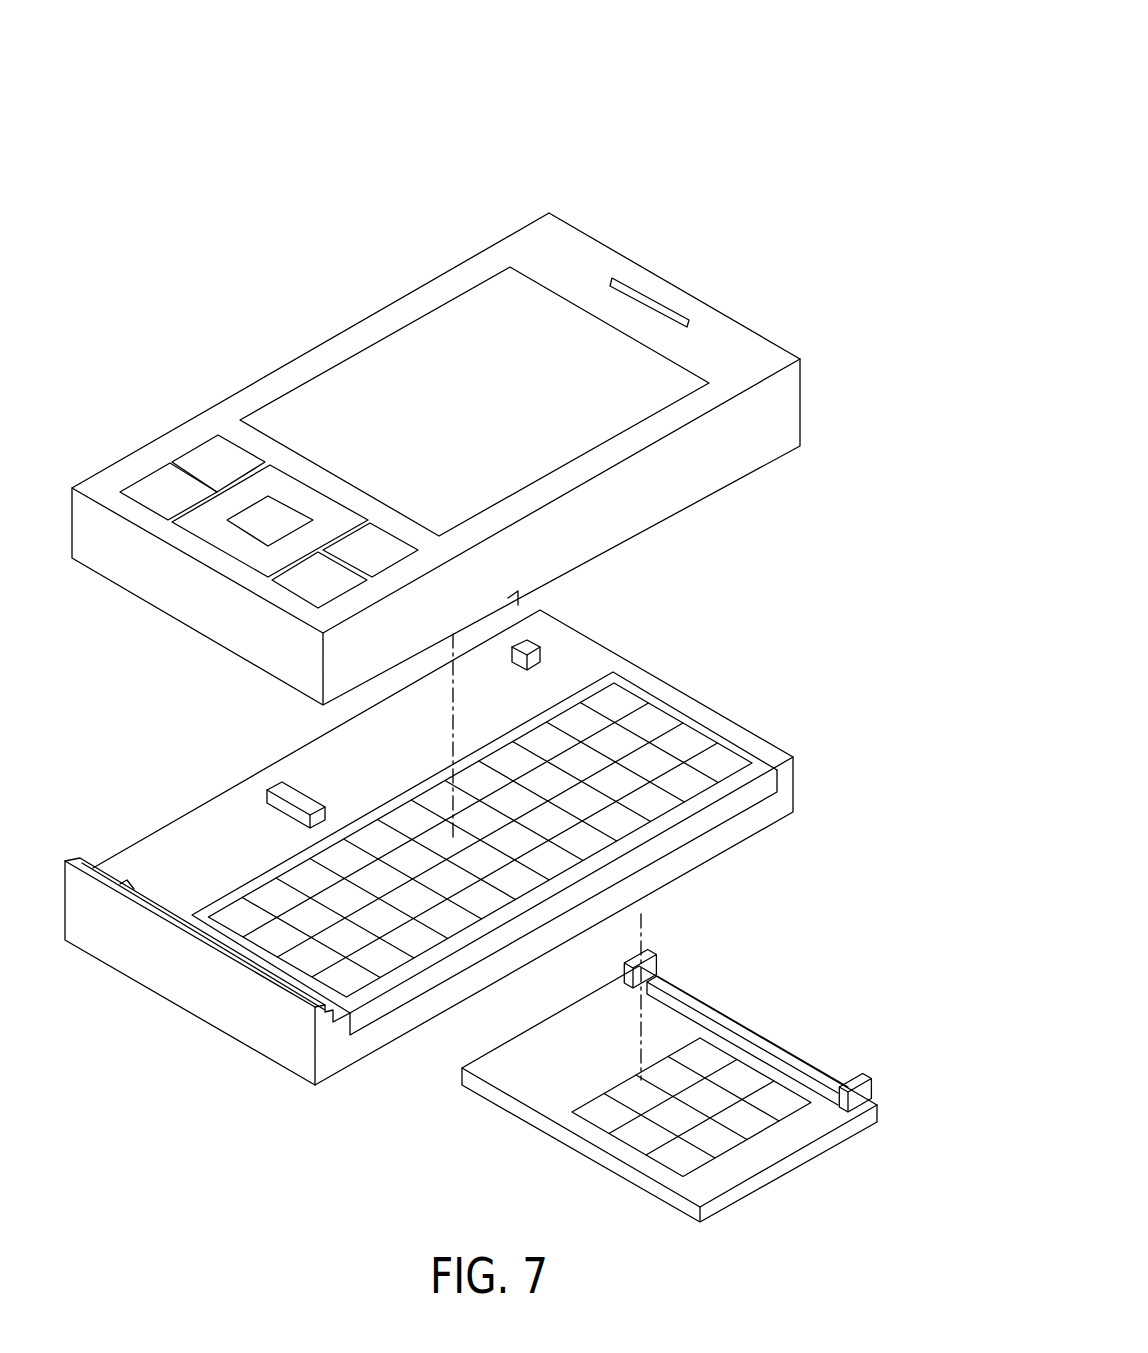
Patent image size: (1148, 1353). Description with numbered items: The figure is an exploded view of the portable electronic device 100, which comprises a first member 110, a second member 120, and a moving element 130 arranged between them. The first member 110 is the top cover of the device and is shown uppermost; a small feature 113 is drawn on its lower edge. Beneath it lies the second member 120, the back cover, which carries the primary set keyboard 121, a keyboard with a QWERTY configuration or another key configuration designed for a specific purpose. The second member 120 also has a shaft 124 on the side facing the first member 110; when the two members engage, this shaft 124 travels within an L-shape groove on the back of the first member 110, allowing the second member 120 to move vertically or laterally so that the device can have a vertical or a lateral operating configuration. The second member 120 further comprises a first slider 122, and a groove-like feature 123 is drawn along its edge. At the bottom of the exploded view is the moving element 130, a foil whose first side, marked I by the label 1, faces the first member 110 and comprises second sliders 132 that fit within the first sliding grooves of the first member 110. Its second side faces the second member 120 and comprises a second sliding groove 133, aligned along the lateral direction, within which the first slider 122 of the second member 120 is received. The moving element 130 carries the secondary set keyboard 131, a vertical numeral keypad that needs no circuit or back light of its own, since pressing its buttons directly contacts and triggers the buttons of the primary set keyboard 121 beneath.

The portable electronic device 100 is at (808, 77).
The first member 110 is at (720, 311).
The notch 113 is at (520, 591).
The second member 120 is at (683, 693).
The primary set keyboard 121 is at (655, 800).
The first slider 122 is at (263, 793).
The sliding groove 123 is at (338, 1023).
The shaft 124 is at (540, 650).
The moving element 130 is at (803, 1065).
The secondary set keyboard 131 is at (760, 1133).
The second slider 132 is at (658, 957).
The second sliding groove 133 is at (714, 1026).
The keypad base plate 1 is at (530, 1088).